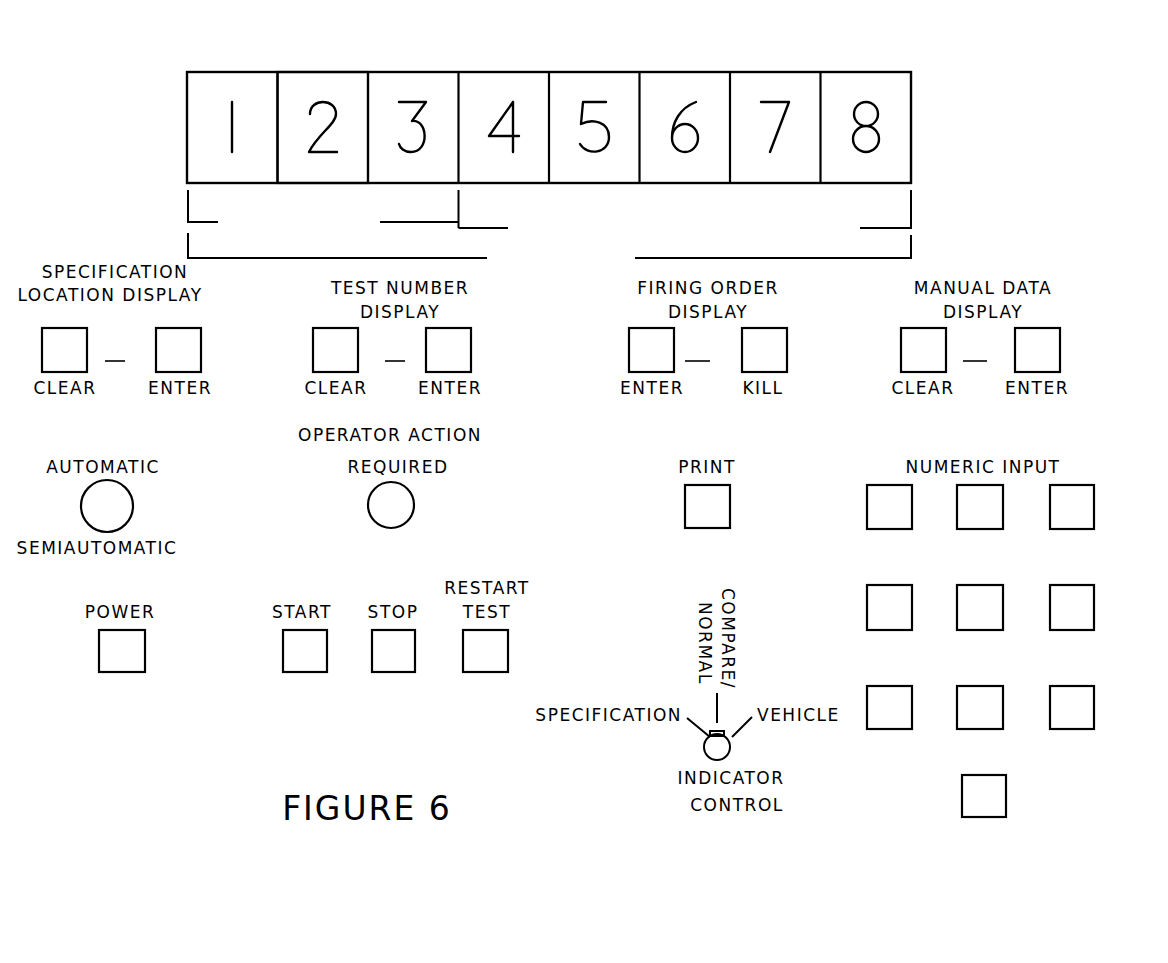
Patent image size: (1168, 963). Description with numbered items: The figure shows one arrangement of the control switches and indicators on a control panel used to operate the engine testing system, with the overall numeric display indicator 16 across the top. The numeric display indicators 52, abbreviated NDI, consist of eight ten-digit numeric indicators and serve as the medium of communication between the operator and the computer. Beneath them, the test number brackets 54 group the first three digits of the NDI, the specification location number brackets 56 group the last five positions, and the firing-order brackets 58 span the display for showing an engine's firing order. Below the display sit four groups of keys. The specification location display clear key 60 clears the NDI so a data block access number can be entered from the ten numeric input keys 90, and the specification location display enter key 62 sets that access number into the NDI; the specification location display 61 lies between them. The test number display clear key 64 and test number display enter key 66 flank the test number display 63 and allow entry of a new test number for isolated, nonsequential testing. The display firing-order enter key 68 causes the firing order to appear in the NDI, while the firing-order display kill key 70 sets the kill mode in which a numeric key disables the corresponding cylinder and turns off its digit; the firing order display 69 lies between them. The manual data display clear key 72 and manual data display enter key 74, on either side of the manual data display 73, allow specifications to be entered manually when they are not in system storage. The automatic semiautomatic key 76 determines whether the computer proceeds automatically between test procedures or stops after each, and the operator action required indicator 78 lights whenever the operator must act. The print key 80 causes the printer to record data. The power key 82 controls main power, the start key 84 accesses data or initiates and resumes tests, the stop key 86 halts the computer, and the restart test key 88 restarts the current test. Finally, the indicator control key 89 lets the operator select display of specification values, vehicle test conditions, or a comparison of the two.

The numeric display indicator 16 is at (819, 65).
The numeric display indicators 52 is at (297, 72).
The test number brackets 54 is at (188, 213).
The specification location number brackets 56 is at (911, 200).
The firing-order brackets 58 is at (911, 248).
The specification location display clear key 60 is at (42, 353).
The specification location display 61 is at (115, 352).
The specification location display enter key 62 is at (201, 356).
The test number display 63 is at (395, 352).
The test number display clear key 64 is at (313, 356).
The test number display enter key 66 is at (472, 357).
The display firing-order enter key 68 is at (629, 357).
The firing order display 69 is at (697, 352).
The firing-order display kill key 70 is at (787, 356).
The manual data display clear key 72 is at (901, 357).
The manual data display 73 is at (975, 352).
The manual data display enter key 74 is at (1060, 357).
The automatic semiautomatic key 76 is at (133, 502).
The operator action required indicator 78 is at (409, 505).
The print key 80 is at (730, 500).
The power key 82 is at (145, 648).
The start key 84 is at (283, 656).
The stop key 86 is at (372, 659).
The restart test key 88 is at (463, 661).
The indicator control key 89 is at (731, 748).
The numeric input keys 90 is at (1097, 497).